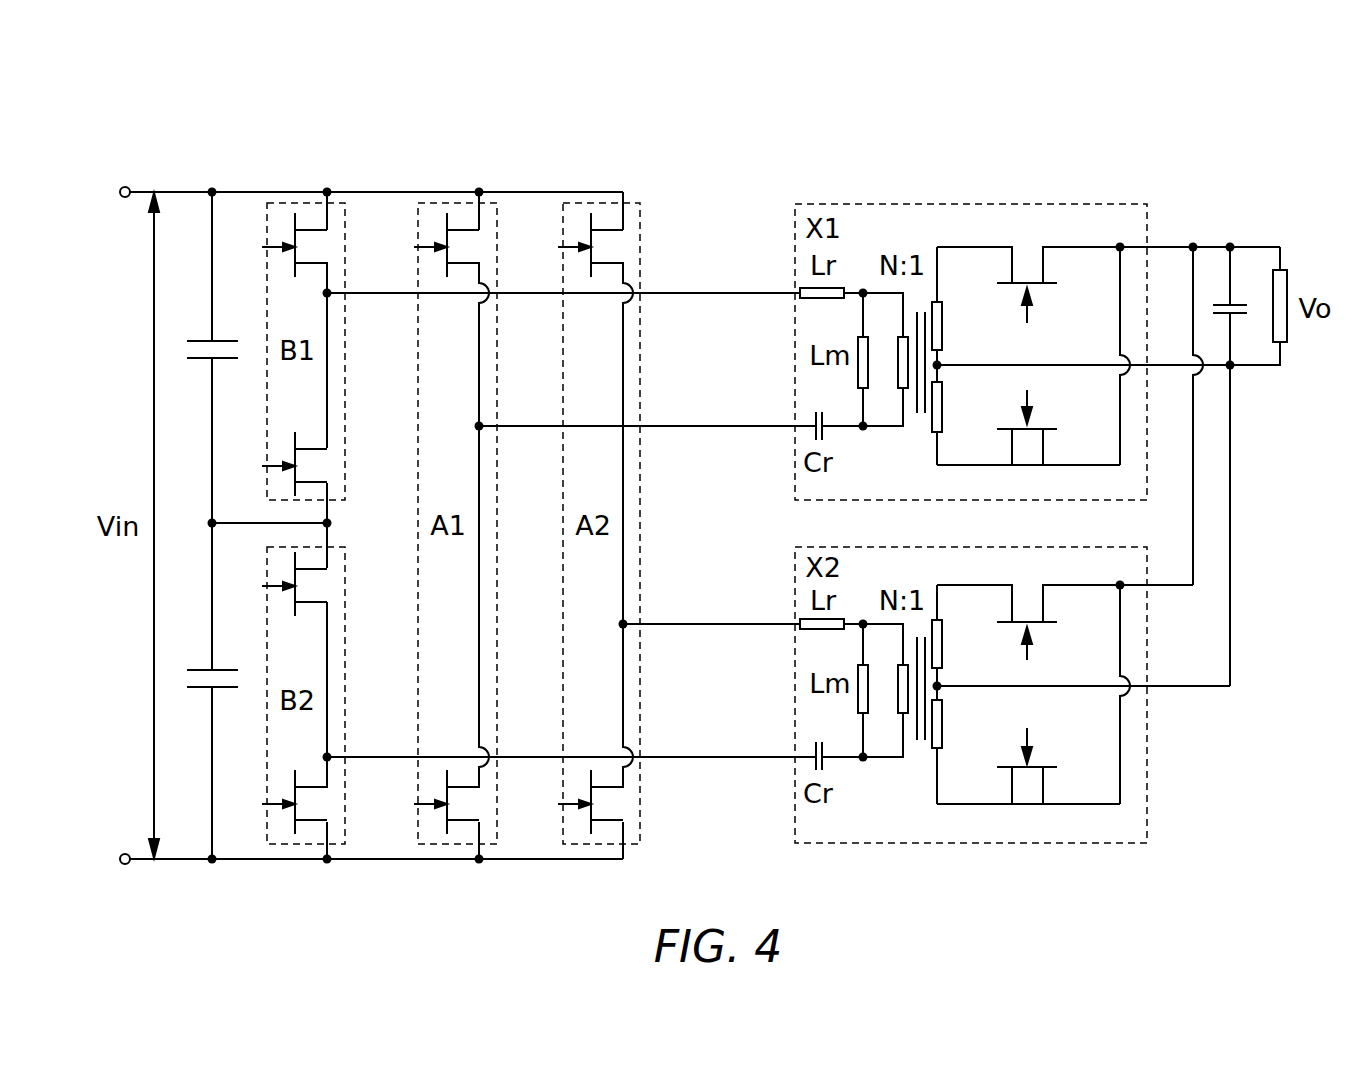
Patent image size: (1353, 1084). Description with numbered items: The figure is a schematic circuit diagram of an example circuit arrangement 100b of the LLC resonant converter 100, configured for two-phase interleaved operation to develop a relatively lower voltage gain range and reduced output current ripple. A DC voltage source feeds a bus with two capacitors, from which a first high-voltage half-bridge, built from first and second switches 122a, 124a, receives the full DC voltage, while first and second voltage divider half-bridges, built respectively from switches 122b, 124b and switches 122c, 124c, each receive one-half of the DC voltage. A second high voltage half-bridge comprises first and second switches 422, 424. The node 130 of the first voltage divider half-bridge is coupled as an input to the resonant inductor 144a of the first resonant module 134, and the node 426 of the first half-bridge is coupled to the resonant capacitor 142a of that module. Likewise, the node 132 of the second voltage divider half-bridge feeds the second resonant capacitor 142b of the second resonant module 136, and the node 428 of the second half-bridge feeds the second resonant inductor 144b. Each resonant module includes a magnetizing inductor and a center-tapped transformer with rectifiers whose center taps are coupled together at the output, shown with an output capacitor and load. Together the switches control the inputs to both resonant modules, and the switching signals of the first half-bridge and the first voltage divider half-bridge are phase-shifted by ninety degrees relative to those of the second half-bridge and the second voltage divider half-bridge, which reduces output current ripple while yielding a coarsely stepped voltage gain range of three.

The LLC resonant converter 100 is at (187, 158).
The circuit arrangement 100b is at (1203, 172).
The first switch 122a is at (447, 235).
The first switch 122b is at (295, 235).
The first switch 122c is at (295, 595).
The second switch 124a is at (447, 817).
The second switch 124b is at (295, 477).
The second switch 124c is at (295, 817).
The node 130 is at (327, 293).
The node 132 is at (327, 757).
The first resonant module 134 is at (987, 298).
The second resonant module 136 is at (962, 751).
The resonant capacitor 142a is at (810, 433).
The second resonant capacitor 142b is at (810, 763).
The resonant inductor 144a is at (822, 300).
The second resonant inductor 144b is at (822, 631).
The first switch 422 is at (591, 235).
The second switch 424 is at (591, 817).
The node 426 is at (479, 426).
The node 428 is at (623, 624).